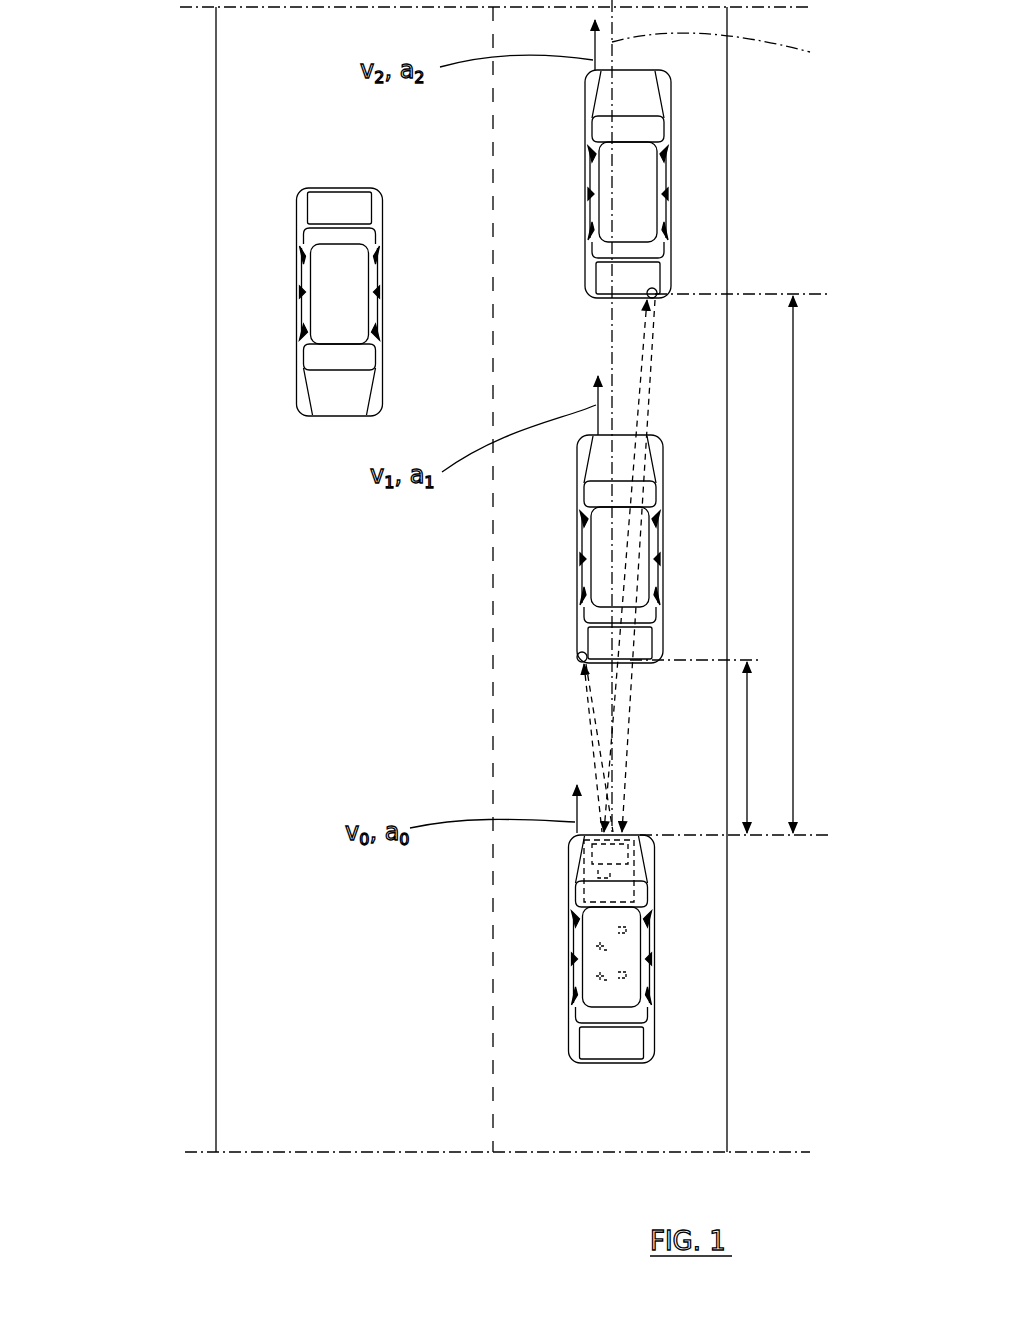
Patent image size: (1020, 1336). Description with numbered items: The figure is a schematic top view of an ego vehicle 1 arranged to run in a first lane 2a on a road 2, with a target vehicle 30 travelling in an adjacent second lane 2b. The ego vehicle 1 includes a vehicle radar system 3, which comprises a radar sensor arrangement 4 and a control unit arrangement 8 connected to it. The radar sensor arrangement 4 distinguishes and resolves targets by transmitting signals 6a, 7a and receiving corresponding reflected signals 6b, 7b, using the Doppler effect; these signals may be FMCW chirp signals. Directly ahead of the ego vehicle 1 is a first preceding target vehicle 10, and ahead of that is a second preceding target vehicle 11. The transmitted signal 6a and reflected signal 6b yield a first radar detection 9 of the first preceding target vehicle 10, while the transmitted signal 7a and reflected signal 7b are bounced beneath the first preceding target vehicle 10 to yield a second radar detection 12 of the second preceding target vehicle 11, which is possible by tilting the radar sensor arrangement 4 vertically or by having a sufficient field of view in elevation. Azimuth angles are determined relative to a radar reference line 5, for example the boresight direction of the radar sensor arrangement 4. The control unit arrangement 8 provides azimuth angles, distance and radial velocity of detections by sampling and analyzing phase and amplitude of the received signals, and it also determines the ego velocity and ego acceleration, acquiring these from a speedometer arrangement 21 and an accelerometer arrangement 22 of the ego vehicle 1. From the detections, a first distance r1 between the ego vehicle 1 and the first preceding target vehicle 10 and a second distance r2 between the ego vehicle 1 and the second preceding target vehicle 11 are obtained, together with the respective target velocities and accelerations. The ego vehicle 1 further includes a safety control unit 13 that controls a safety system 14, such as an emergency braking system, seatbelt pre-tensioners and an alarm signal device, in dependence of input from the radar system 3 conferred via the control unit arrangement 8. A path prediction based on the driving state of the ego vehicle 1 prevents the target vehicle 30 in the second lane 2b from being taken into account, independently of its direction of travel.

The ego vehicle 1 is at (615, 995).
The road 2 is at (282, 745).
The first lane 2a is at (607, 1124).
The second lane 2b is at (392, 1112).
The vehicle radar system 3 is at (595, 905).
The radar sensor arrangement 4 is at (637, 860).
The radar reference line 5 is at (720, 51).
The transmitted signal 6a is at (585, 778).
The received reflected signal 6b is at (583, 700).
The transmitted signal 7a is at (652, 385).
The received reflected signal 7b is at (652, 425).
The control unit arrangement 8 is at (590, 877).
The first radar detection 9 is at (575, 656).
The first preceding target vehicle 10 is at (640, 548).
The second preceding target vehicle 11 is at (628, 158).
The second radar detection 12 is at (660, 287).
The safety control unit 13 is at (628, 930).
The safety system 14 is at (628, 975).
The speedometer arrangement 21 is at (600, 947).
The accelerometer arrangement 22 is at (600, 980).
The target vehicle 30 is at (340, 288).
The first distance r1 is at (762, 747).
The second distance r2 is at (809, 564).